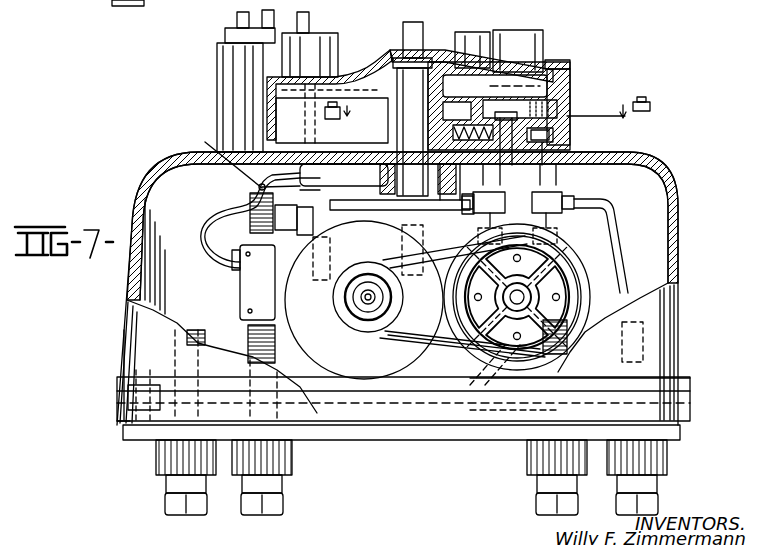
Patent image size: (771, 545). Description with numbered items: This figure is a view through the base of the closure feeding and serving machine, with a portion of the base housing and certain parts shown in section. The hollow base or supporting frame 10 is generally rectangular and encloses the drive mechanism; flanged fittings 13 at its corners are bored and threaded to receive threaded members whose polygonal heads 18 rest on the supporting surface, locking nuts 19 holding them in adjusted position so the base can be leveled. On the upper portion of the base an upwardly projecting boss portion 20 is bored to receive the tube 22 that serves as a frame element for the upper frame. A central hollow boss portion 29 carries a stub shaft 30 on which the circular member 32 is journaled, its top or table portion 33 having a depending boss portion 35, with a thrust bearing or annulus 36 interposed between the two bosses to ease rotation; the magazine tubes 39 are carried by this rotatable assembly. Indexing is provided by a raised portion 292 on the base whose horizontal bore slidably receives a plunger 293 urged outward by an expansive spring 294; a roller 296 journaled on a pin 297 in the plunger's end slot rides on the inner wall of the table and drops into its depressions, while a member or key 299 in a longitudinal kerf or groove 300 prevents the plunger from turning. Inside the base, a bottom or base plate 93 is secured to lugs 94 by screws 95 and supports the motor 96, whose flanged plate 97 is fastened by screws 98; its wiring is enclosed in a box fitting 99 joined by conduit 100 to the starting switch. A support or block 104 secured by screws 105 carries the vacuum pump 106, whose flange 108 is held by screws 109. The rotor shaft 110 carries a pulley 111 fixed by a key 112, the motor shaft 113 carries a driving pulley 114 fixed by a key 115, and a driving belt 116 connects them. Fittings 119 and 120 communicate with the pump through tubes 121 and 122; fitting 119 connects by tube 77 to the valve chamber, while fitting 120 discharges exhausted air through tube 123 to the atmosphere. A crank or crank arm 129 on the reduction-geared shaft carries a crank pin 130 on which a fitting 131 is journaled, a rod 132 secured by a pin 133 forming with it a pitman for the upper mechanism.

The hollow base or supporting frame 10 is at (688, 252).
The flanged fittings 13 is at (142, 438).
The polygonal heads 18 is at (112, 4).
The locking nuts 19 is at (167, 483).
The boss portion 20 is at (222, 92).
The tube 22 is at (226, 36).
The central hollow boss portion 29 is at (392, 125).
The stub shaft 30 is at (440, 62).
The circular member 32 is at (571, 88).
The top or table portion 33 is at (570, 65).
The boss portion 35 is at (392, 50).
The thrust bearing or annulus 36 is at (341, 113).
The magazine tubes 39 is at (545, 42).
The tube 77 is at (324, 177).
The bottom or base plate 93 is at (360, 400).
The lugs 94 is at (126, 362).
The screws 95 is at (118, 417).
The motor 96 is at (405, 372).
The flanged plate 97 is at (424, 392).
The screws 98 is at (316, 372).
The box fitting 99 is at (242, 298).
The conduit 100 is at (222, 256).
The support or block 104 is at (575, 383).
The screws 105 is at (562, 409).
The vacuum pump 106 is at (565, 297).
The flange 108 is at (495, 425).
The screws 109 is at (460, 420).
The rotor shaft 110 is at (517, 311).
The pulley 111 is at (582, 272).
The key 112 is at (520, 292).
The motor shaft 113 is at (372, 333).
The driving pulley 114 is at (345, 316).
The key 115 is at (371, 290).
The driving belt 116 is at (405, 264).
The fitting 119 is at (489, 209).
The fitting 120 is at (575, 200).
The tube 121 is at (490, 222).
The tube 122 is at (550, 222).
The tube 123 is at (638, 270).
The crank or crank arm 129 is at (266, 228).
The crank pin 130 is at (328, 192).
The fitting 131 is at (258, 188).
The rod 132 is at (275, 14).
The pin 133 is at (215, 156).
The raised portion 292 is at (484, 112).
The plunger 293 is at (520, 128).
The expansive spring 294 is at (476, 128).
The roller 296 is at (566, 135).
The pin 297 is at (545, 142).
The member or key 299 is at (498, 142).
The kerf or groove 300 is at (514, 142).